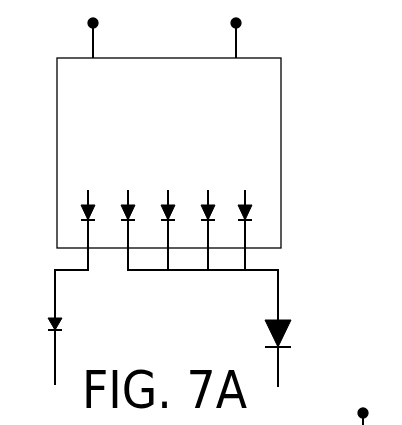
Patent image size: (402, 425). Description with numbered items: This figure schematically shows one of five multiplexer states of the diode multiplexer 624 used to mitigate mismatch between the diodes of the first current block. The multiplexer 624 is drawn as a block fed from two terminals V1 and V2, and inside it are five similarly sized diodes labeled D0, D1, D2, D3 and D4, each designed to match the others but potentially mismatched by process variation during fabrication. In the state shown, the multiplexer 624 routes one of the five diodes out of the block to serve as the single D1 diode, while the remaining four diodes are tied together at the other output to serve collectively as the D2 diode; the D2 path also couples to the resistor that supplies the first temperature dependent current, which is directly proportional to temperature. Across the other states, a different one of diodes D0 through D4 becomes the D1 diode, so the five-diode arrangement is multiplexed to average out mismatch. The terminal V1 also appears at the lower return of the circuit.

The multiplexer 624 is at (214, 153).
The diode D0 is at (88, 207).
The D1 diode D1 is at (128, 207).
The D2 diode D2 is at (168, 207).
The diode D3 is at (208, 207).
The diode D4 is at (245, 207).
The voltage terminal V1 is at (214, 218).
The voltage terminal V2 is at (251, 35).